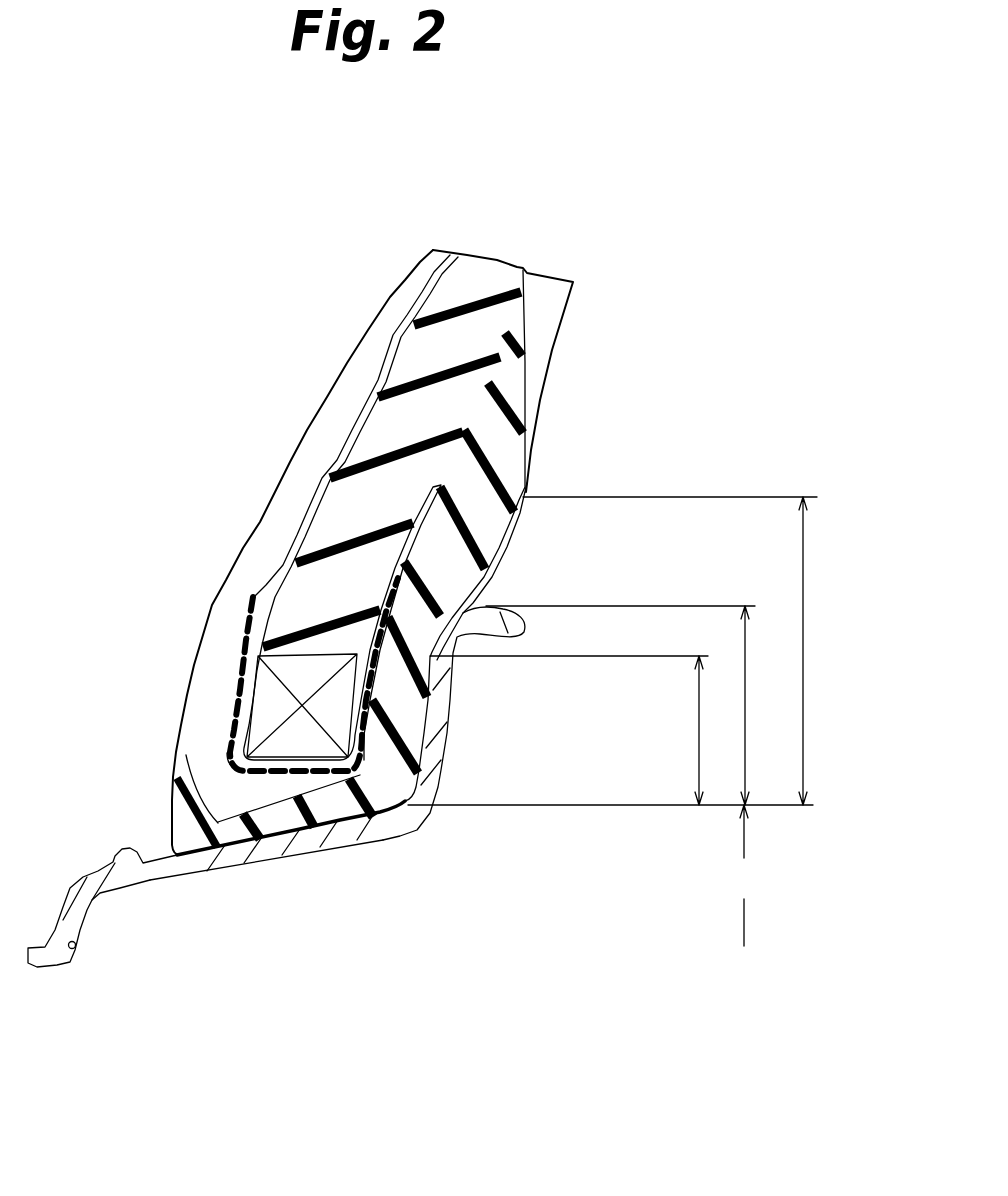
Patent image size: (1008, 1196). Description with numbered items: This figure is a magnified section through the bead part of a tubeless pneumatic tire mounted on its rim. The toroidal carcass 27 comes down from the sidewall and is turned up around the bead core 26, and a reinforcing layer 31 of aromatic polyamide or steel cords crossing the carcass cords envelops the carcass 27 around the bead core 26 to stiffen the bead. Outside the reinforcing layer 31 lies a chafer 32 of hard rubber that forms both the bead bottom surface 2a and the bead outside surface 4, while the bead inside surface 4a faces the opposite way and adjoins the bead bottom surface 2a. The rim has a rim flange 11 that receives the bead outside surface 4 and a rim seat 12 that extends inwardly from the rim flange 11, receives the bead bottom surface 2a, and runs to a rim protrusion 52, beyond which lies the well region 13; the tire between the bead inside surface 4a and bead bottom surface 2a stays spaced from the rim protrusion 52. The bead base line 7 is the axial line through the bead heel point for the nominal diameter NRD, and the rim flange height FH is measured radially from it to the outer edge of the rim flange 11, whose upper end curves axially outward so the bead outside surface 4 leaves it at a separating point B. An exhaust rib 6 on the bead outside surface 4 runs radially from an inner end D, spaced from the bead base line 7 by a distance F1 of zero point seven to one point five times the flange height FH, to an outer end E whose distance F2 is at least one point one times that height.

The carcass 27 is at (373, 383).
The chafer 32 is at (508, 382).
The bead core 26 is at (292, 677).
The reinforcing layer 31 is at (228, 690).
The bead inside surface 4a is at (172, 810).
The exhaust rib 6 is at (525, 527).
The rim flange 11 is at (450, 703).
The bead outside surface 4 is at (422, 745).
The bead bottom surface 2a is at (268, 838).
The rim seat 12 is at (337, 842).
The rim protrusion 52 is at (120, 848).
The well region 13 is at (75, 949).
The bead base line 7 is at (692, 805).
The outer end E is at (528, 490).
The separating point B is at (488, 594).
The inner end D is at (441, 660).
The distance F1 is at (699, 701).
The rim flange height FH is at (745, 699).
The distance F2 is at (803, 656).
The nominal diameter NRD is at (755, 875).